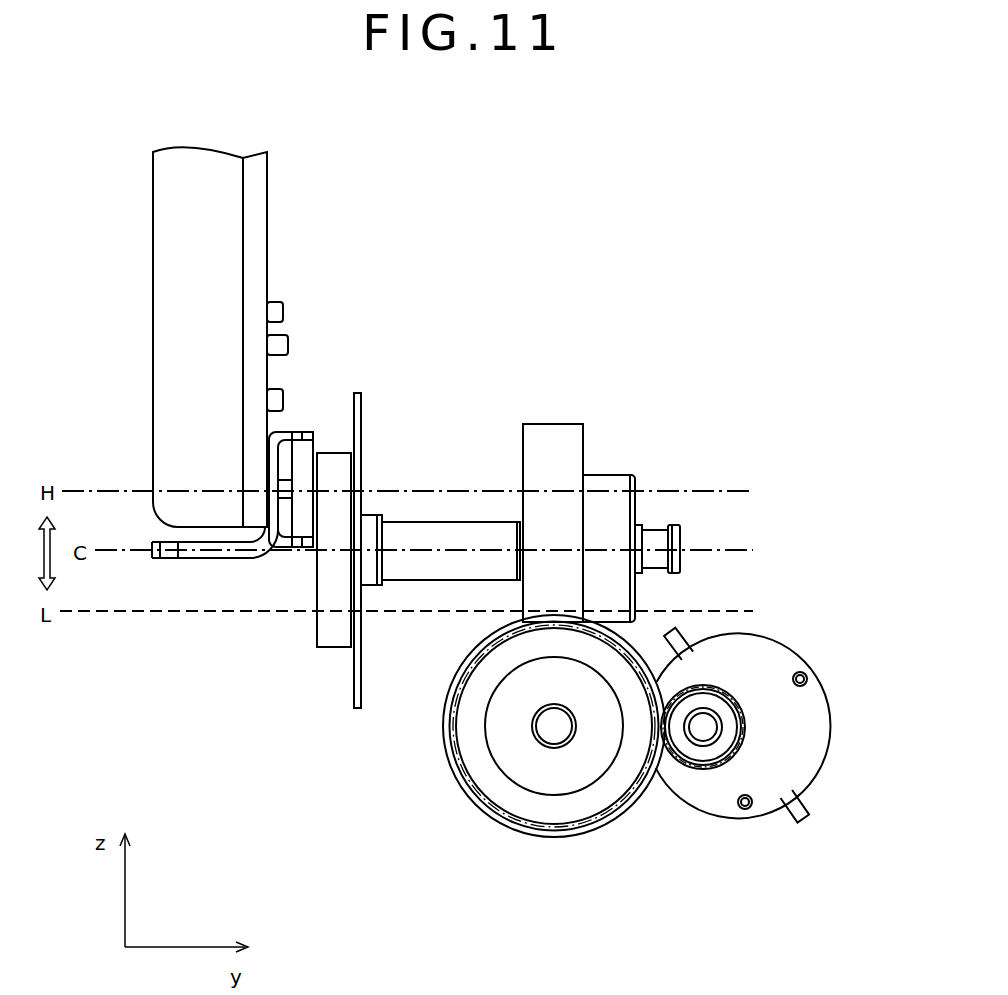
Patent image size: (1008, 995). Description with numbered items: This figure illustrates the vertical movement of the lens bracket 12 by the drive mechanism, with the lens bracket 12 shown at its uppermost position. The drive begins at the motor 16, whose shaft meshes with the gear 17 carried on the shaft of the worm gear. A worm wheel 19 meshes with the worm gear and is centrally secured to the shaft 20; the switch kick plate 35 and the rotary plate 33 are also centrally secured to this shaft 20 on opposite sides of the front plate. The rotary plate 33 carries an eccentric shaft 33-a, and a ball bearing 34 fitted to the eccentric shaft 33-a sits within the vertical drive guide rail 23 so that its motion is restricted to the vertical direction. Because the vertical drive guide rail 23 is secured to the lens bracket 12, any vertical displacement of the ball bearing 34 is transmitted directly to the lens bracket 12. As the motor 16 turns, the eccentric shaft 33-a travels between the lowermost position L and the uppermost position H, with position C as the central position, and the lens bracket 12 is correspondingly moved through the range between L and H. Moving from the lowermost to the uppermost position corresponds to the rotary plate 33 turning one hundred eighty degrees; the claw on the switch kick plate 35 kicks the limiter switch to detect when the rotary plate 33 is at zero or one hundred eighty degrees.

The lens bracket 12 is at (207, 173).
The motor 16 is at (805, 735).
The gear 17 is at (553, 838).
The worm wheel 19 is at (550, 437).
The shaft 20 is at (445, 533).
The vertical drive guide rail 23 is at (288, 548).
The rotary plate 33 is at (337, 463).
The eccentric shaft 33-a is at (283, 486).
The ball bearing 34 is at (306, 448).
The switch kick plate 35 is at (363, 403).